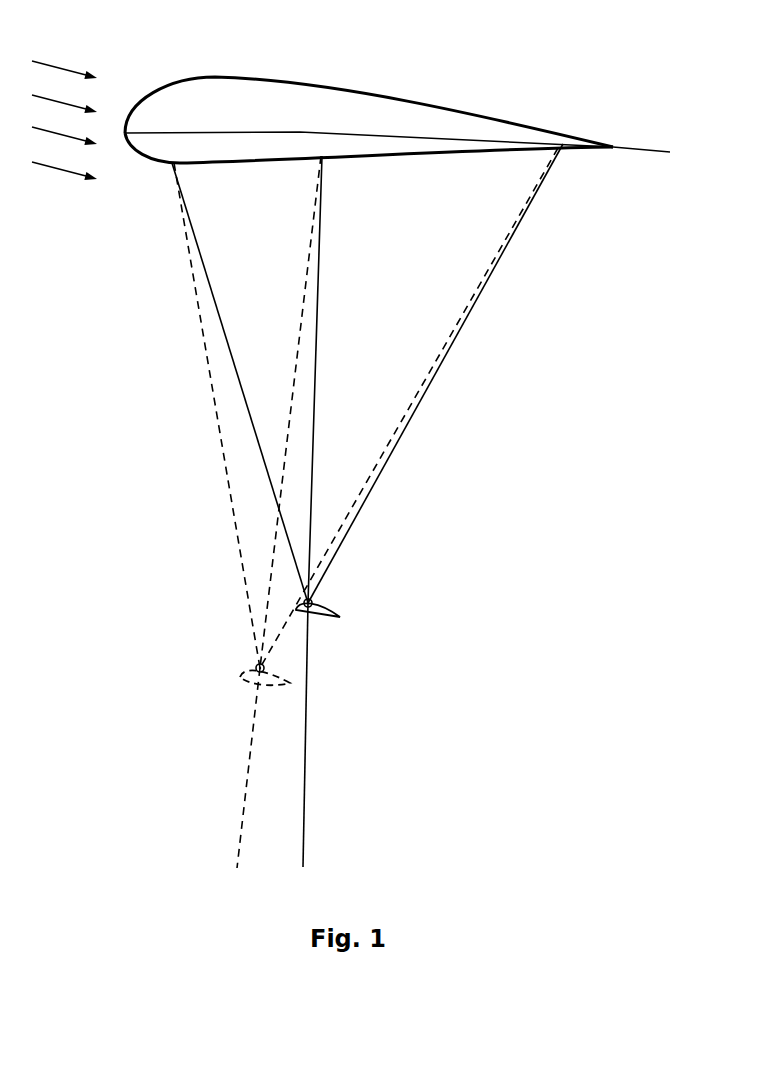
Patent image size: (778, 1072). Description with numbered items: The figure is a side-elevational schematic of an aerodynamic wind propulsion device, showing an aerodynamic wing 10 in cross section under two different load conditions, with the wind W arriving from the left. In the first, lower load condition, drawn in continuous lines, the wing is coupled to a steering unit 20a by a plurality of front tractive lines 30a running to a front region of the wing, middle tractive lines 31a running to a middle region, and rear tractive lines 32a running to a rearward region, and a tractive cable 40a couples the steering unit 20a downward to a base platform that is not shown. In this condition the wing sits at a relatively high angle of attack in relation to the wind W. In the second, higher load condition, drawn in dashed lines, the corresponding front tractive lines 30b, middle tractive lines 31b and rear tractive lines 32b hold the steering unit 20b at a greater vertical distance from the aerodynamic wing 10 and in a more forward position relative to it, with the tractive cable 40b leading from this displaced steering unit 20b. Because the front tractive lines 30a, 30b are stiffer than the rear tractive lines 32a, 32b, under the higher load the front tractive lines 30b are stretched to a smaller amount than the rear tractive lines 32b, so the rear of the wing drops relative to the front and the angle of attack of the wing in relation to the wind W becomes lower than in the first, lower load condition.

The wind W is at (64, 101).
The aerodynamic wing 10 is at (337, 102).
The steering unit 20a is at (321, 602).
The steering unit 20b is at (278, 672).
The front tractive lines 30a is at (228, 333).
The front tractive lines 30b is at (238, 538).
The middle tractive lines 31a is at (313, 385).
The middle tractive lines 31b is at (270, 583).
The rear tractive lines 32a is at (405, 428).
The rear tractive lines 32b is at (332, 543).
The tractive cable 40a is at (306, 762).
The tractive cable 40b is at (244, 805).